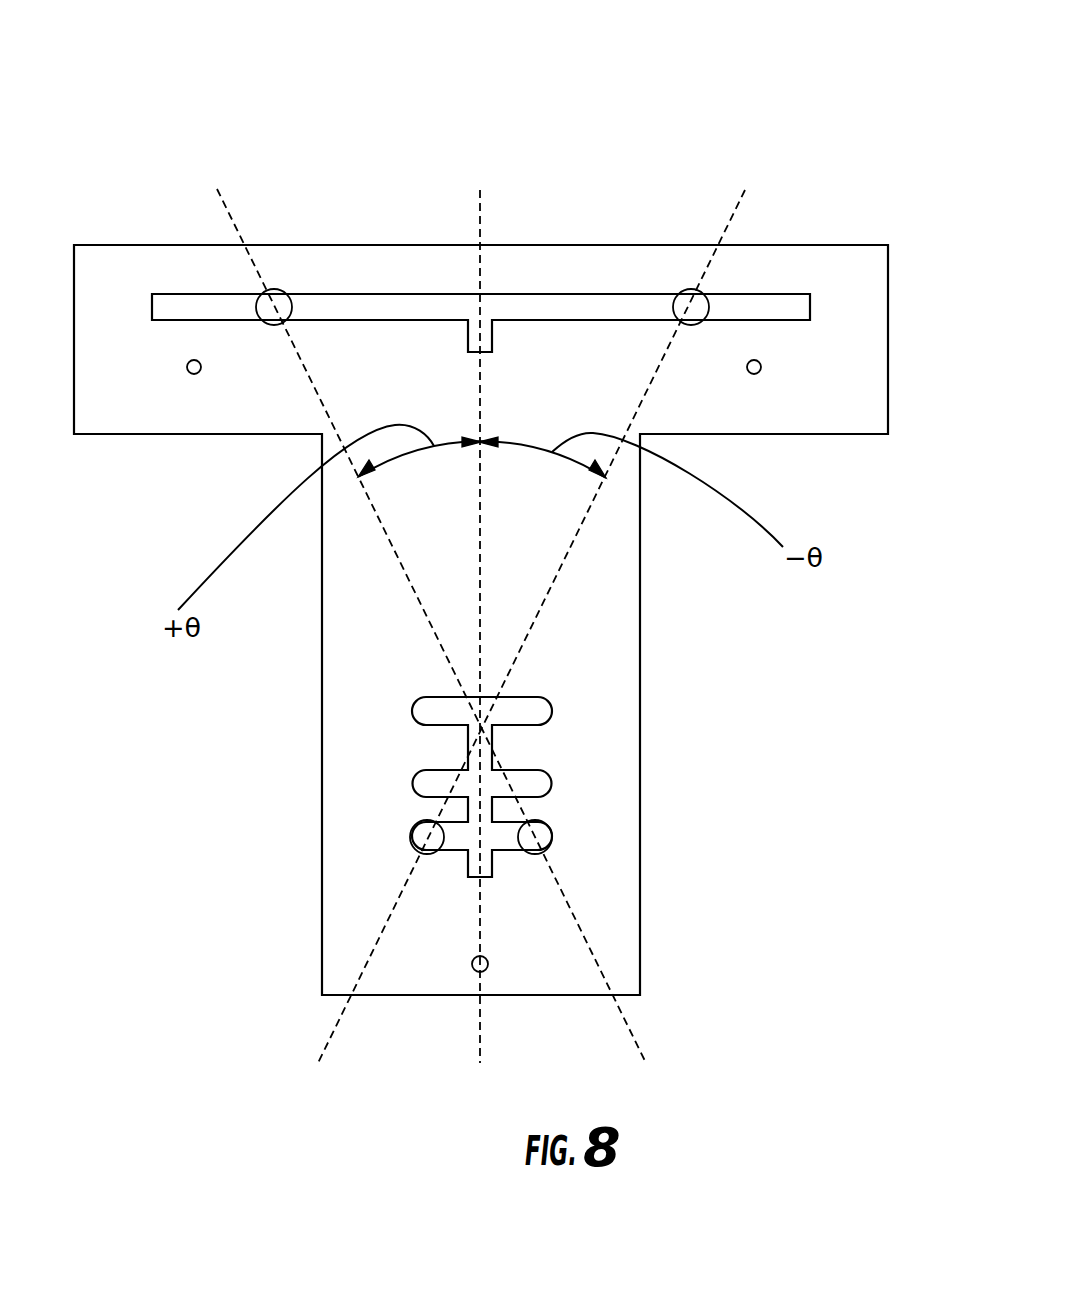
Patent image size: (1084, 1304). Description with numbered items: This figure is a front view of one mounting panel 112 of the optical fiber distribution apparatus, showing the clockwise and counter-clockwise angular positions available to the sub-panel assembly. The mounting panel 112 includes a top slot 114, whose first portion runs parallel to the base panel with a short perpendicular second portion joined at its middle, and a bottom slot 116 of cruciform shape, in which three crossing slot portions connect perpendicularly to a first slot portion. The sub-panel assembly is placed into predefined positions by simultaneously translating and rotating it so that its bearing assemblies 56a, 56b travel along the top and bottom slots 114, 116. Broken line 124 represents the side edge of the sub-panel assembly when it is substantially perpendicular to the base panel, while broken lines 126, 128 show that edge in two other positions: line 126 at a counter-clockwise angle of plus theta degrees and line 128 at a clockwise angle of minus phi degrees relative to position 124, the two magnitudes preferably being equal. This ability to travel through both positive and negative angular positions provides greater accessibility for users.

The mounting panel 112 is at (585, 128).
The top slot 114 is at (586, 294).
The bottom slot 116 is at (533, 697).
The broken line 124 is at (480, 1017).
The broken line 126 is at (230, 215).
The broken line 128 is at (747, 202).
The bearing assembly 56a is at (256, 307).
The bearing assembly 56b is at (408, 840).